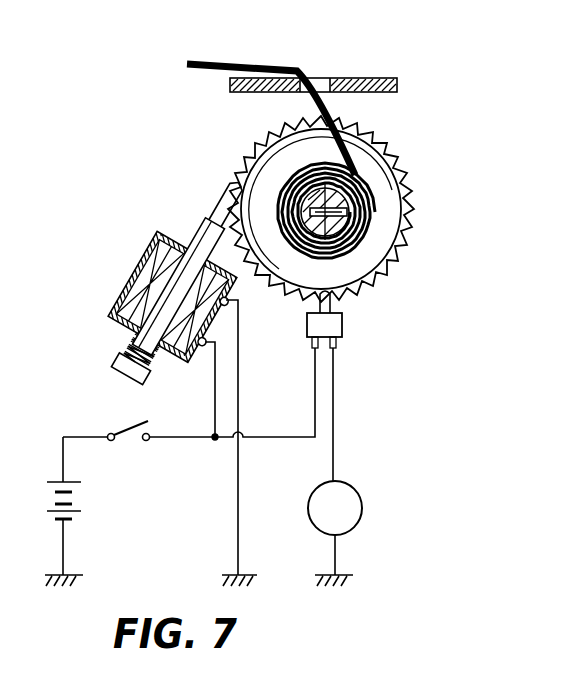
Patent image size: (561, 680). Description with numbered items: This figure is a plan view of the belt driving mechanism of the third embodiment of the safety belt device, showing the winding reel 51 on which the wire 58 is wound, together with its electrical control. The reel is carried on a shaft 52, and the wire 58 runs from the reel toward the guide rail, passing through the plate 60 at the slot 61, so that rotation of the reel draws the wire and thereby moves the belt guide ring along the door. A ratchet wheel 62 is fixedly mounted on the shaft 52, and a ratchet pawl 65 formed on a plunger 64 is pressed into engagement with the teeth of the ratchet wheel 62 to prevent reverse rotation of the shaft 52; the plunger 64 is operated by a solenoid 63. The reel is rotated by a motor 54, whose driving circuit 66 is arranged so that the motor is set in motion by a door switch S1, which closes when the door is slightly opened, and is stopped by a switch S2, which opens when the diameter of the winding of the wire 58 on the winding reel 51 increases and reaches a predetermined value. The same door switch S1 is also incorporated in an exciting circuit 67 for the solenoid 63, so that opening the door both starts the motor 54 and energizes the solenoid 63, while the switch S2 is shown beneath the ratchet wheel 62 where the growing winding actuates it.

The winding reel 51 is at (378, 252).
The shaft 52 is at (325, 186).
The motor 54 is at (346, 518).
The wire 58 is at (224, 61).
The plate 60 is at (377, 78).
The slot 61 is at (323, 78).
The ratchet wheel 62 is at (237, 167).
The solenoid 63 is at (130, 308).
The plunger 64 is at (165, 262).
The ratchet pawl 65 is at (213, 202).
The driving circuit 66 is at (280, 440).
The exciting circuit 67 is at (237, 508).
The door switch S1 is at (132, 442).
The switch S2 is at (343, 325).